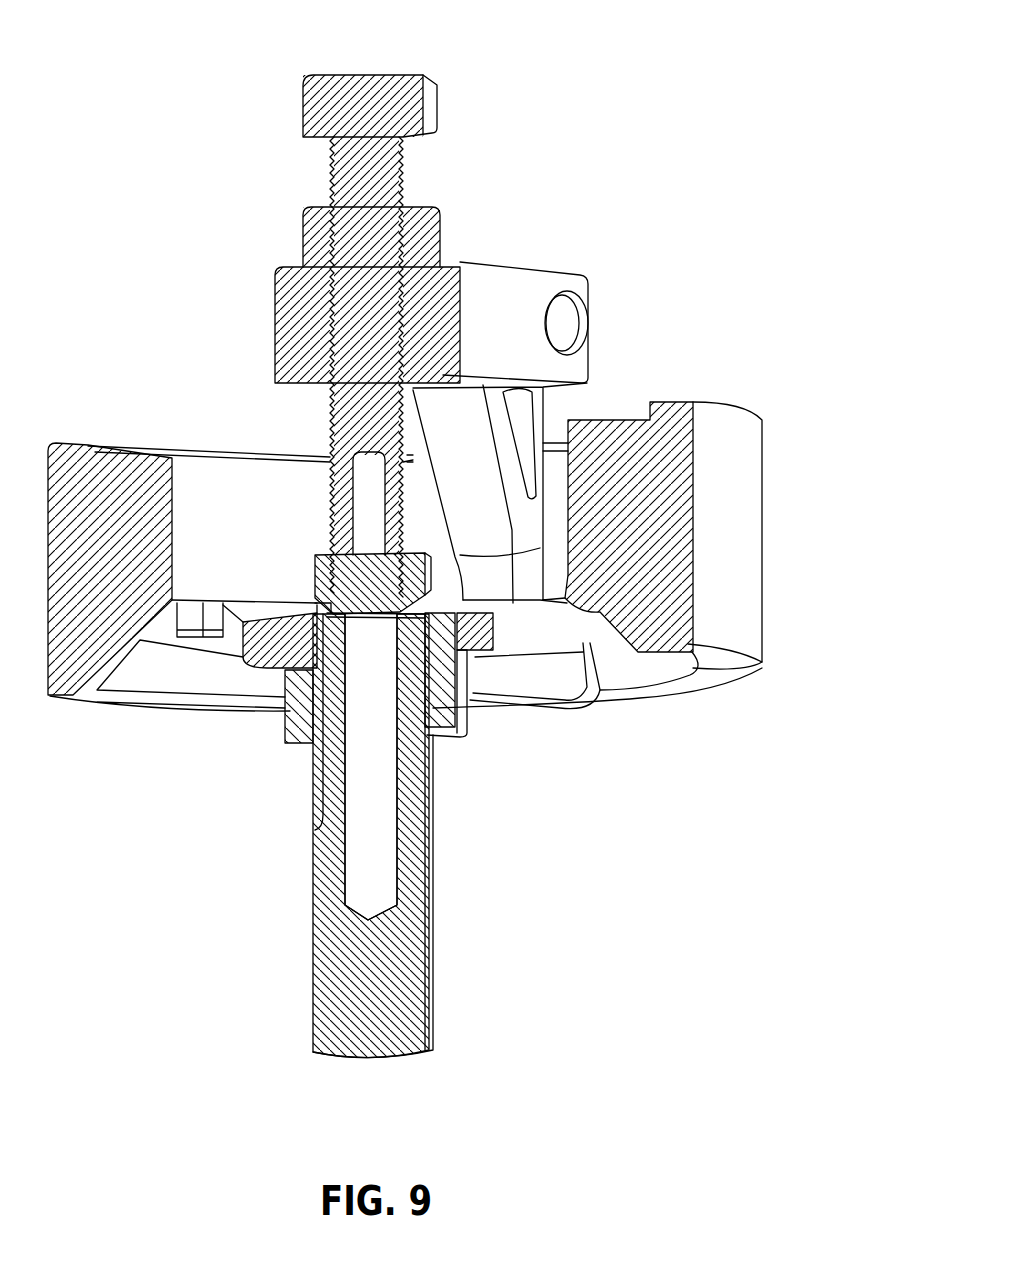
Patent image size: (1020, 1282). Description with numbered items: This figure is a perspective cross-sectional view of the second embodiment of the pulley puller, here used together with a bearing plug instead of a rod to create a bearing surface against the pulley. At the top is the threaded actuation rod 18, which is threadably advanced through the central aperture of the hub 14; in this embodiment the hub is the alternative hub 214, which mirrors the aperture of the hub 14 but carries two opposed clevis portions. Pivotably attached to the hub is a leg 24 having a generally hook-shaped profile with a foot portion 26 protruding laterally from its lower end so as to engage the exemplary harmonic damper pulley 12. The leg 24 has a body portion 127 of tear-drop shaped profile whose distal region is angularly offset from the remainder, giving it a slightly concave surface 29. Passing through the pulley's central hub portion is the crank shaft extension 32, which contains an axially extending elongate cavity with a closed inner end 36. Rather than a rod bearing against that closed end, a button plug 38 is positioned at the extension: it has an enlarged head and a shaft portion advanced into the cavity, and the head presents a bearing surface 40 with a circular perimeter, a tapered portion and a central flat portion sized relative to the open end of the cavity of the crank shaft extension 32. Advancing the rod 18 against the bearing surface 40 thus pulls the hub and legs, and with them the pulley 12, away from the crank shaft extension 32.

The threaded actuation rod 18 is at (385, 95).
The central hub 14 is at (456, 249).
The hub 214 is at (478, 198).
The harmonic damper pulley 12 is at (803, 379).
The surface 29 is at (460, 463).
The leg 24 is at (412, 435).
The body portion 127 is at (472, 508).
The button plug 38 is at (302, 601).
The bearing surface 40 is at (322, 613).
The crank shaft extension 32 is at (335, 998).
The closed inner end 36 is at (365, 880).
The foot portion 26 is at (560, 687).